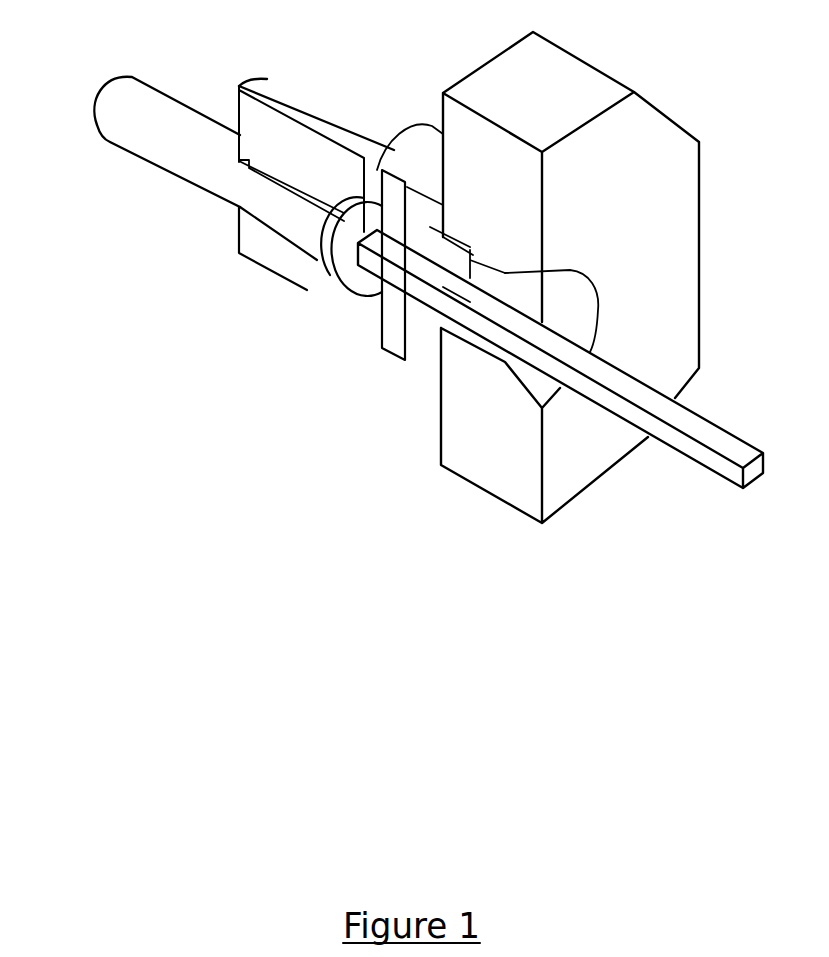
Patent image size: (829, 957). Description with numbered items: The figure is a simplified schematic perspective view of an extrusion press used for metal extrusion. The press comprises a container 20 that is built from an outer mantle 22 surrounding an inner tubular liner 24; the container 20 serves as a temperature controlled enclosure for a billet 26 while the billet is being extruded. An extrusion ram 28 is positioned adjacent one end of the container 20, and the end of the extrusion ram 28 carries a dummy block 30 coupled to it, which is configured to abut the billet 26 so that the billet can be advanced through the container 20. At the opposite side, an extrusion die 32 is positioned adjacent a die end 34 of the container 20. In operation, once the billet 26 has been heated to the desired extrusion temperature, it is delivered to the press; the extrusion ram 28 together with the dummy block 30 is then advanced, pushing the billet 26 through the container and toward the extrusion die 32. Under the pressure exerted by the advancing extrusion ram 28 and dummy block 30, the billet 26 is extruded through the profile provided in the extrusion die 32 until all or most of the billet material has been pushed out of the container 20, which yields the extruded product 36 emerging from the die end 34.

The container 20 is at (384, 108).
The outer mantle 22 is at (330, 163).
The inner tubular liner 24 is at (285, 186).
The billet 26 is at (293, 219).
The extrusion ram 28 is at (170, 155).
The dummy block 30 is at (249, 166).
The extrusion die 32 is at (327, 272).
The die end 34 is at (350, 307).
The extruded product 36 is at (690, 445).